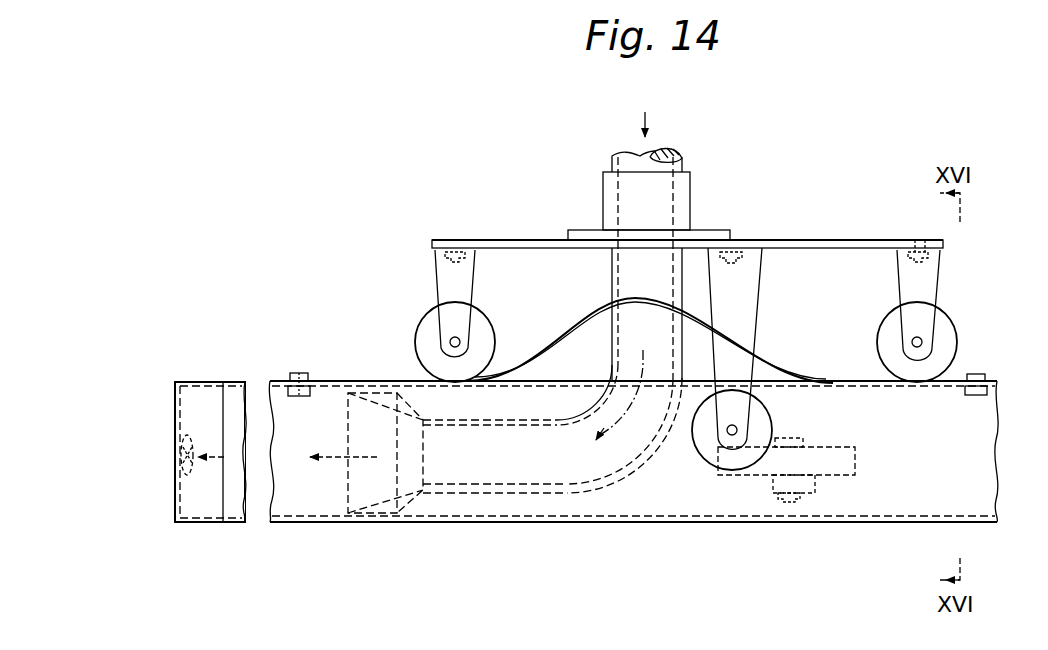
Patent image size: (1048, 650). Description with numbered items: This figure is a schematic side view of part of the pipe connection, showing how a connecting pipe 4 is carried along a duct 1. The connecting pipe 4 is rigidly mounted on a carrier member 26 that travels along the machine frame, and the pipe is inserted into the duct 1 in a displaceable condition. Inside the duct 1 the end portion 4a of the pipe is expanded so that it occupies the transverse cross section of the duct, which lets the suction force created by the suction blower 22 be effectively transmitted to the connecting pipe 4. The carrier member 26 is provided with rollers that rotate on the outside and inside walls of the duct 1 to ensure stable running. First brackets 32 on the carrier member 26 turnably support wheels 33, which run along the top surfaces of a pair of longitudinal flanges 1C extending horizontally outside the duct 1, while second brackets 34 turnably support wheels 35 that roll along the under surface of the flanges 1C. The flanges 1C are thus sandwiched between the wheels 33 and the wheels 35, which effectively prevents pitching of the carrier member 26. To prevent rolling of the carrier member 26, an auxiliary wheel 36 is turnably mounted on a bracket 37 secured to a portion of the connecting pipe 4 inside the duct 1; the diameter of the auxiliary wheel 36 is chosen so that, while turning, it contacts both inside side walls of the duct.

The duct 1 is at (990, 430).
The longitudinal flanges 1C is at (978, 374).
The connecting pipe 4 is at (683, 158).
The end portion 4a is at (388, 500).
The suction blower 22 is at (183, 470).
The carrier member 26 is at (857, 221).
The first brackets 32 is at (462, 282).
The wheels 33 is at (418, 340).
The second brackets 34 is at (756, 296).
The wheels 35 is at (708, 440).
The auxiliary wheel 36 is at (858, 457).
The bracket 37 is at (705, 492).